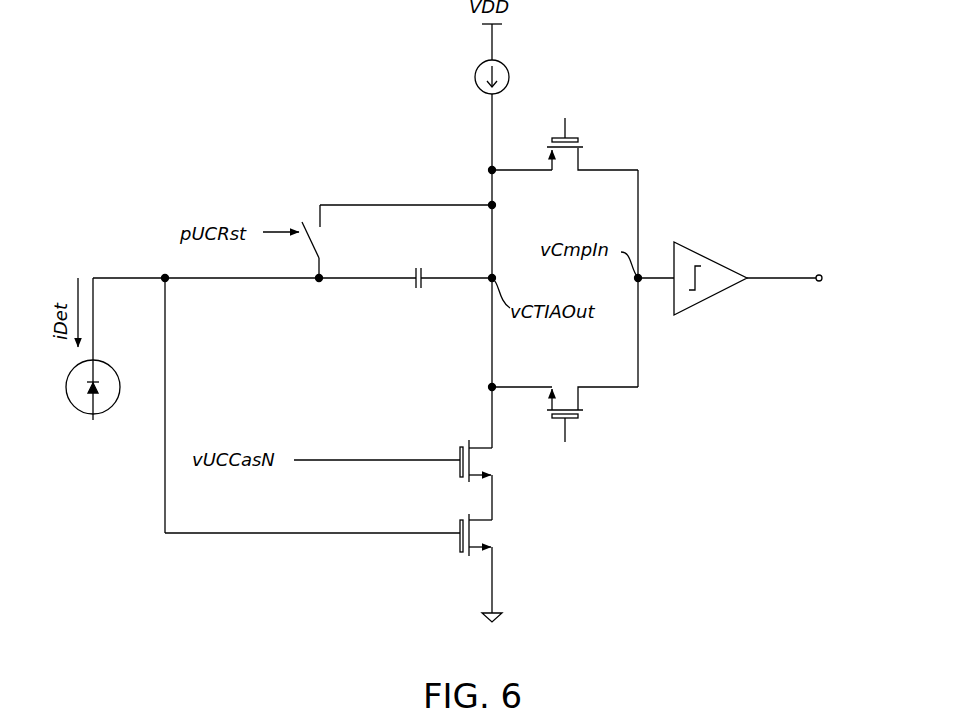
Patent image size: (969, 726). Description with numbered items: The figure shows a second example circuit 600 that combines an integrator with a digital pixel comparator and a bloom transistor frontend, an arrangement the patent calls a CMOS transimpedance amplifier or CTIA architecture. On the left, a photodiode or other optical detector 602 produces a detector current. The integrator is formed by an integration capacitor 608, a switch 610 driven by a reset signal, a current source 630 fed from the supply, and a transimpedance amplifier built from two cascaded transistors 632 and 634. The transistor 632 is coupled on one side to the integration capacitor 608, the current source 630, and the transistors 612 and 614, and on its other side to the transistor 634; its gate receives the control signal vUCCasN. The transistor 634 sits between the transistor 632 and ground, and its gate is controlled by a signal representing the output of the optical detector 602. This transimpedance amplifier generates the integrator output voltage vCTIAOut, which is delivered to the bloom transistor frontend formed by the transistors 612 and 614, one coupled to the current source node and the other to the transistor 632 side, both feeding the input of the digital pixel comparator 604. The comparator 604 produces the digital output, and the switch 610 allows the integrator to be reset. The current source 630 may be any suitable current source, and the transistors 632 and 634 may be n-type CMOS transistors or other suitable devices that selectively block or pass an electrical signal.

The circuit 600 is at (775, 105).
The optical detector 602 is at (101, 419).
The digital pixel comparator 604 is at (713, 257).
The integration capacitor 608 is at (419, 293).
The switch 610 is at (299, 212).
The transistor 612 is at (588, 146).
The transistor 614 is at (588, 417).
The current source 630 is at (474, 77).
The transistor 632 is at (452, 471).
The transistor 634 is at (456, 544).